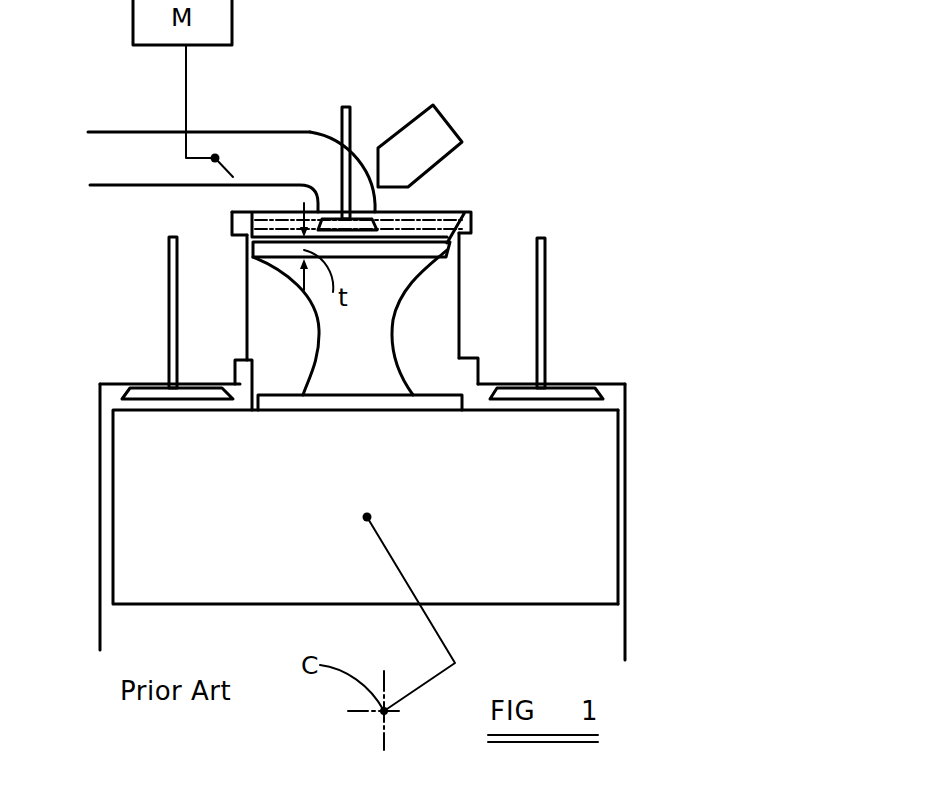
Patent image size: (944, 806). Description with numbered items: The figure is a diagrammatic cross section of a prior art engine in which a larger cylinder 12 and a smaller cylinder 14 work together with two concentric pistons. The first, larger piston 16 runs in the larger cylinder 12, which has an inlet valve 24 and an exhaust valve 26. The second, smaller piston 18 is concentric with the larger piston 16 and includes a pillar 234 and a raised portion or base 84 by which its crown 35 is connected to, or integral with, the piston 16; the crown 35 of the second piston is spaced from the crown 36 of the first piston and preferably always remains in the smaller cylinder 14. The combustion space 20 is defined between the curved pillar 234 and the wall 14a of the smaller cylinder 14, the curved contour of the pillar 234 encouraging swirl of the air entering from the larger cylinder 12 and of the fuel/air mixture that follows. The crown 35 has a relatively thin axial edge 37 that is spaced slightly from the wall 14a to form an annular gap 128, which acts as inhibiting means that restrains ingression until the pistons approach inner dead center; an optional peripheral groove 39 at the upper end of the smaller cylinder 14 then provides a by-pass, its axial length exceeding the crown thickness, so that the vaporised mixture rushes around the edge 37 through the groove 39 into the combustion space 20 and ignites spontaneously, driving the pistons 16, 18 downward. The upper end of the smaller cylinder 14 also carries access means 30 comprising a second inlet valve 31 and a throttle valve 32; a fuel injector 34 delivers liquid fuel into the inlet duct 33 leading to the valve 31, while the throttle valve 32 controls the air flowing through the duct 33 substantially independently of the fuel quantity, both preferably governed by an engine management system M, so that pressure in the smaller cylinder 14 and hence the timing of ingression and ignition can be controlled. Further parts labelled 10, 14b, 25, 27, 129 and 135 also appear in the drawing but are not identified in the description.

The polishing apparatus 10 is at (90, 567).
The larger cylinder 12 is at (615, 392).
The smaller cylinder 14 is at (258, 308).
The wall of the smaller cylinder 14a is at (242, 266).
The housing lower flange 14b is at (248, 360).
The first piston 16 is at (548, 580).
The second piston 18 is at (388, 270).
The combustion space 20 is at (440, 345).
The inlet valve 24 is at (545, 305).
The right spring region 25 is at (580, 333).
The exhaust valve 26 is at (168, 248).
The left spring region 27 is at (133, 333).
The access means 30 is at (312, 126).
The second inlet valve 31 is at (350, 110).
The throttle valve 32 is at (200, 143).
The inlet duct 33 is at (108, 157).
The fuel injector 34 is at (437, 133).
The crown of the second piston 35 is at (418, 218).
The crown of the first piston 36 is at (598, 410).
The edge of the second piston crown 37 is at (447, 251).
The peripheral groove 39 is at (470, 228).
The base 84 is at (310, 403).
The annular gap 128 is at (249, 212).
The right foot 129 is at (470, 397).
The left foot 135 is at (238, 366).
The pillar 234 is at (364, 372).